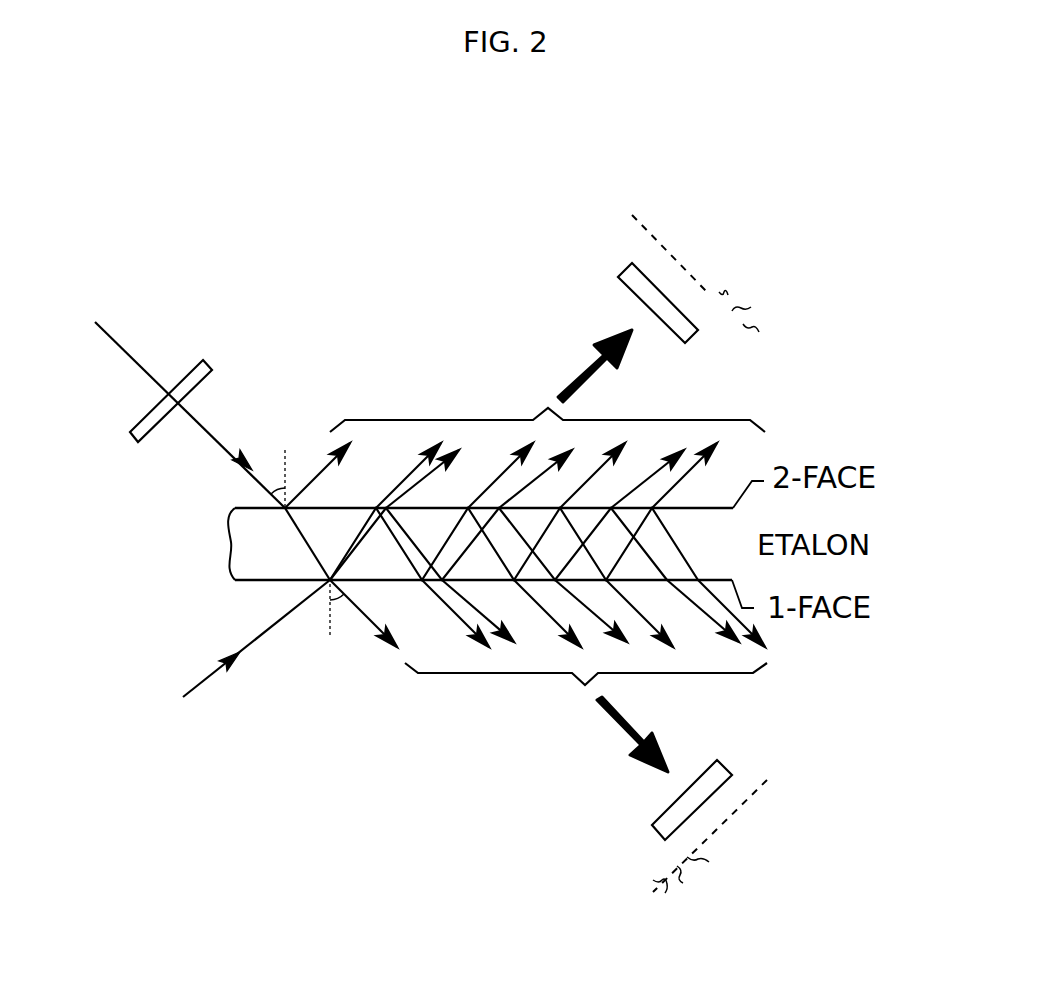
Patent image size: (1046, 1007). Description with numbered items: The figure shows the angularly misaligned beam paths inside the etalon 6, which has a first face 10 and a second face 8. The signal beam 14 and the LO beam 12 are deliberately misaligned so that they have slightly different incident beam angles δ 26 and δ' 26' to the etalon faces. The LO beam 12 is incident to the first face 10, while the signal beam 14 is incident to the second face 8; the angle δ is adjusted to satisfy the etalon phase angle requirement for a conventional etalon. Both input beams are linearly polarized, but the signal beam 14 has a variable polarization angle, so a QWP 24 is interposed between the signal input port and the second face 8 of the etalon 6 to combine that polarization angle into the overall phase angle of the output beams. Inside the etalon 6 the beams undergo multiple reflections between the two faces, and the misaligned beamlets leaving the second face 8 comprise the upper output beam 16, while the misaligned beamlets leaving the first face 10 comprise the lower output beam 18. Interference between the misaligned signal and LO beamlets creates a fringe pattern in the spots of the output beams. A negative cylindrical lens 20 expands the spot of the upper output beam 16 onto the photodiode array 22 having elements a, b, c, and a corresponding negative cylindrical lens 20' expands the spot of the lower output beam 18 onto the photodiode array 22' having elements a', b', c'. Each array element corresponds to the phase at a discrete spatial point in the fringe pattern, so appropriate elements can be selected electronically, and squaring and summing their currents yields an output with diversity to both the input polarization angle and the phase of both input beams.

The etalon 6 is at (462, 547).
The 2-face 8 is at (245, 507).
The 1-face 10 is at (262, 582).
The LO beam 12 is at (205, 680).
The signal beam 14 is at (132, 358).
The output beam P2 16 is at (612, 360).
The output beam P1 18 is at (655, 740).
The negative cylindrical lens 20 is at (635, 293).
The negative cylindrical lens 20' is at (661, 809).
The photodiode array 22 is at (711, 273).
The photodiode array 22' is at (773, 851).
The QWP 24 is at (132, 434).
The incident beam angle δ 26 is at (266, 461).
The incident beam angle δ' 26' is at (308, 626).